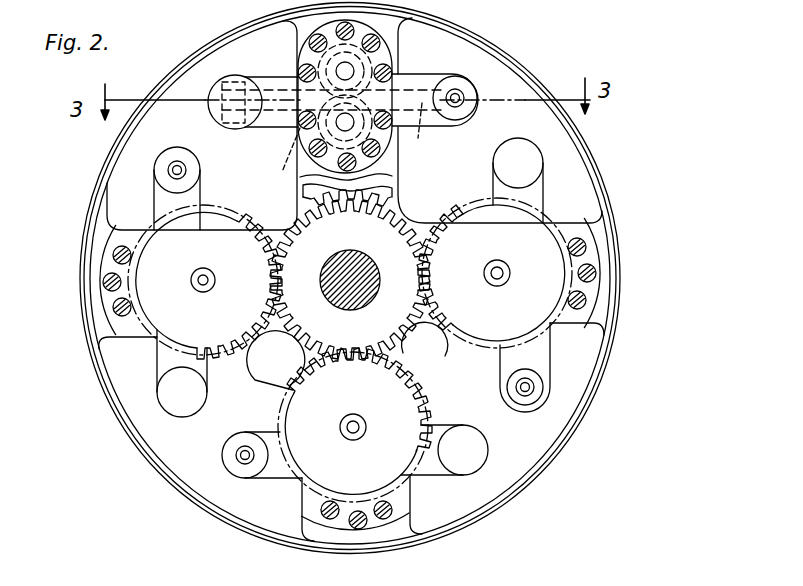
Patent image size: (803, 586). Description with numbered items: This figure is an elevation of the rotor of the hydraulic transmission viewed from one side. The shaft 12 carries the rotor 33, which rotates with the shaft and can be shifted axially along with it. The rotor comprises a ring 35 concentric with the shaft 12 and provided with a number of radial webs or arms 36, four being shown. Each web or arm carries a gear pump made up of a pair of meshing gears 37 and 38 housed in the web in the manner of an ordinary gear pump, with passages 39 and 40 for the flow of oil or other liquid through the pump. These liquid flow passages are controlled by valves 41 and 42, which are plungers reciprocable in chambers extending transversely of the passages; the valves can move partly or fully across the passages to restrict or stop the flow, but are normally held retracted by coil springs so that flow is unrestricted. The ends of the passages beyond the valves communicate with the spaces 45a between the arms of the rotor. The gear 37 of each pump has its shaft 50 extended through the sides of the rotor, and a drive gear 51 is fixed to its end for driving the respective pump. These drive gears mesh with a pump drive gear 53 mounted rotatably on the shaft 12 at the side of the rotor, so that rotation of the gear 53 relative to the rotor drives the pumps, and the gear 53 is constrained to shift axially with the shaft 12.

The shaft 12 is at (359, 260).
The rotor 33 is at (624, 236).
The ring 35 is at (594, 178).
The radial webs or arms 36 is at (393, 184).
The gear 37 is at (278, 165).
The gear 38 is at (298, 58).
The passage 39 is at (423, 133).
The passage 40 is at (262, 127).
The valve 41 is at (182, 174).
The valve 42 is at (207, 117).
The spaces 45a is at (350, 302).
The shaft 50 is at (507, 251).
The drive gear 51 is at (252, 350).
The pump drive gear 53 is at (403, 330).